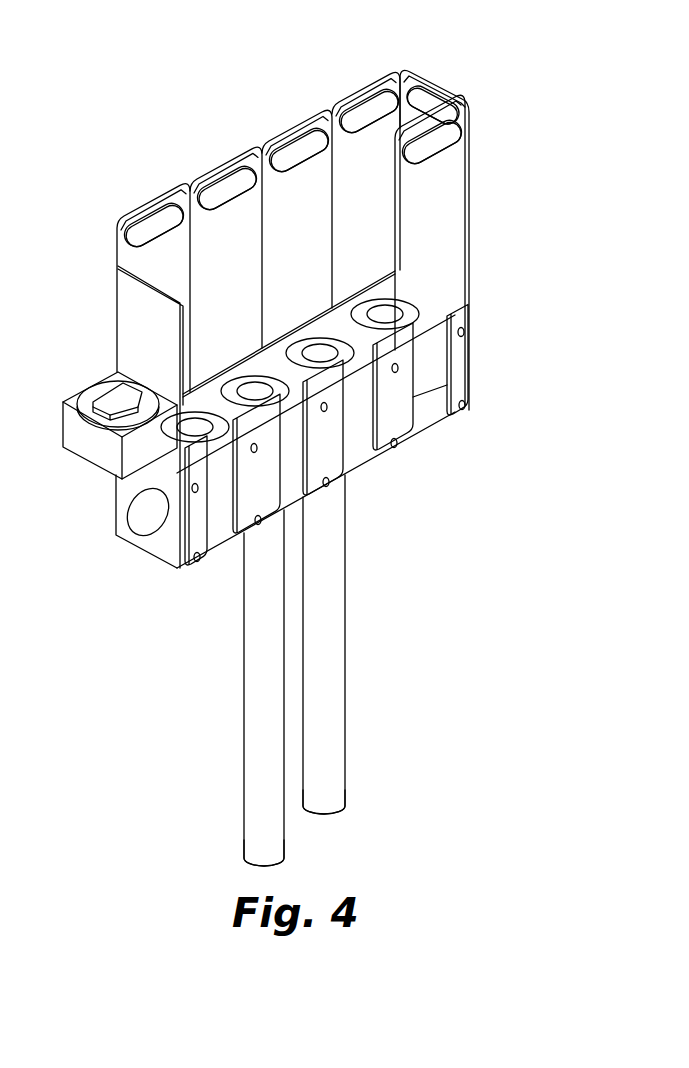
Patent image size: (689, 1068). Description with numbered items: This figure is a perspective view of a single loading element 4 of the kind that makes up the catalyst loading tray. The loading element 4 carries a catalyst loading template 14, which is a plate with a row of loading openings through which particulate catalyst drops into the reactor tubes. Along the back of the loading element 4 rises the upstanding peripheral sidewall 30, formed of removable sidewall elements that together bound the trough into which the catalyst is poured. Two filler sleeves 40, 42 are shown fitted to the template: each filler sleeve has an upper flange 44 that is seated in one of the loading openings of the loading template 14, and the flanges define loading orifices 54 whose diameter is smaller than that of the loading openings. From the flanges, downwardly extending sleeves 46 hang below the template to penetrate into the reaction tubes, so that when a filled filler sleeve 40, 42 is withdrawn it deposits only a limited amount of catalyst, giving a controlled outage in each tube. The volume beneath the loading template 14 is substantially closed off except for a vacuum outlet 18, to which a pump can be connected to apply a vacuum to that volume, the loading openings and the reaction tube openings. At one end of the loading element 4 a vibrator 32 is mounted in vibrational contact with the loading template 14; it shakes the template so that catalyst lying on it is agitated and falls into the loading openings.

The loading element 4 is at (498, 132).
The upstanding peripheral sidewall 30 is at (301, 92).
The loading template 14 is at (345, 322).
The vibrator 32 is at (115, 397).
The vacuum outlet 18 is at (145, 520).
The upper flange 44 is at (223, 470).
The loading orifice 54 is at (203, 437).
The filler sleeve 40 is at (222, 740).
The filler sleeve 42 is at (368, 715).
The downwardly extending sleeve 46 is at (270, 833).